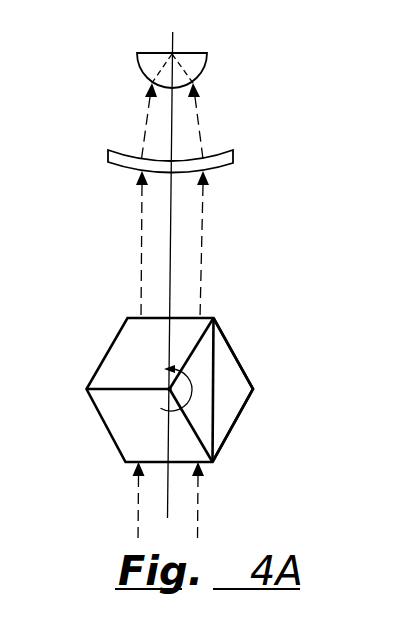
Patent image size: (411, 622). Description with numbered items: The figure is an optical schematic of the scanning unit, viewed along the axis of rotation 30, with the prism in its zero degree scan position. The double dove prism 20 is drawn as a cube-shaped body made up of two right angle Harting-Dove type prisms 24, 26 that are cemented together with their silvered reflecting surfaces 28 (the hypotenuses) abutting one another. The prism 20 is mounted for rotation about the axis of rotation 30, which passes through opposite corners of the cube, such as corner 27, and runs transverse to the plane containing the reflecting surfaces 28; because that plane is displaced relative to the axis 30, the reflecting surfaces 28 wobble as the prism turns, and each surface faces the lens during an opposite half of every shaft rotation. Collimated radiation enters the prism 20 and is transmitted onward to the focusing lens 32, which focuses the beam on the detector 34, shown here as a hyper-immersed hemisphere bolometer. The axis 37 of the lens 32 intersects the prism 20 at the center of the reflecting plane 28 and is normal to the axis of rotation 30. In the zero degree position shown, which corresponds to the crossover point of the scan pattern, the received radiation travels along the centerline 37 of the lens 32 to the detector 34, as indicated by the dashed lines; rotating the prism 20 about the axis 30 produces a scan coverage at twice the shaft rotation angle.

The double dove prism 20 is at (112, 338).
The right angle Harting-Dove type prism 24 is at (182, 333).
The right angle Harting-Dove type prism 26 is at (250, 378).
The corner of the cube 27 is at (169, 389).
The silvered reflecting surface 28 is at (213, 372).
The axis of rotation 30 is at (175, 392).
The focusing lens 32 is at (213, 152).
The detector 34 is at (138, 52).
The axis of the lens 37 is at (175, 37).